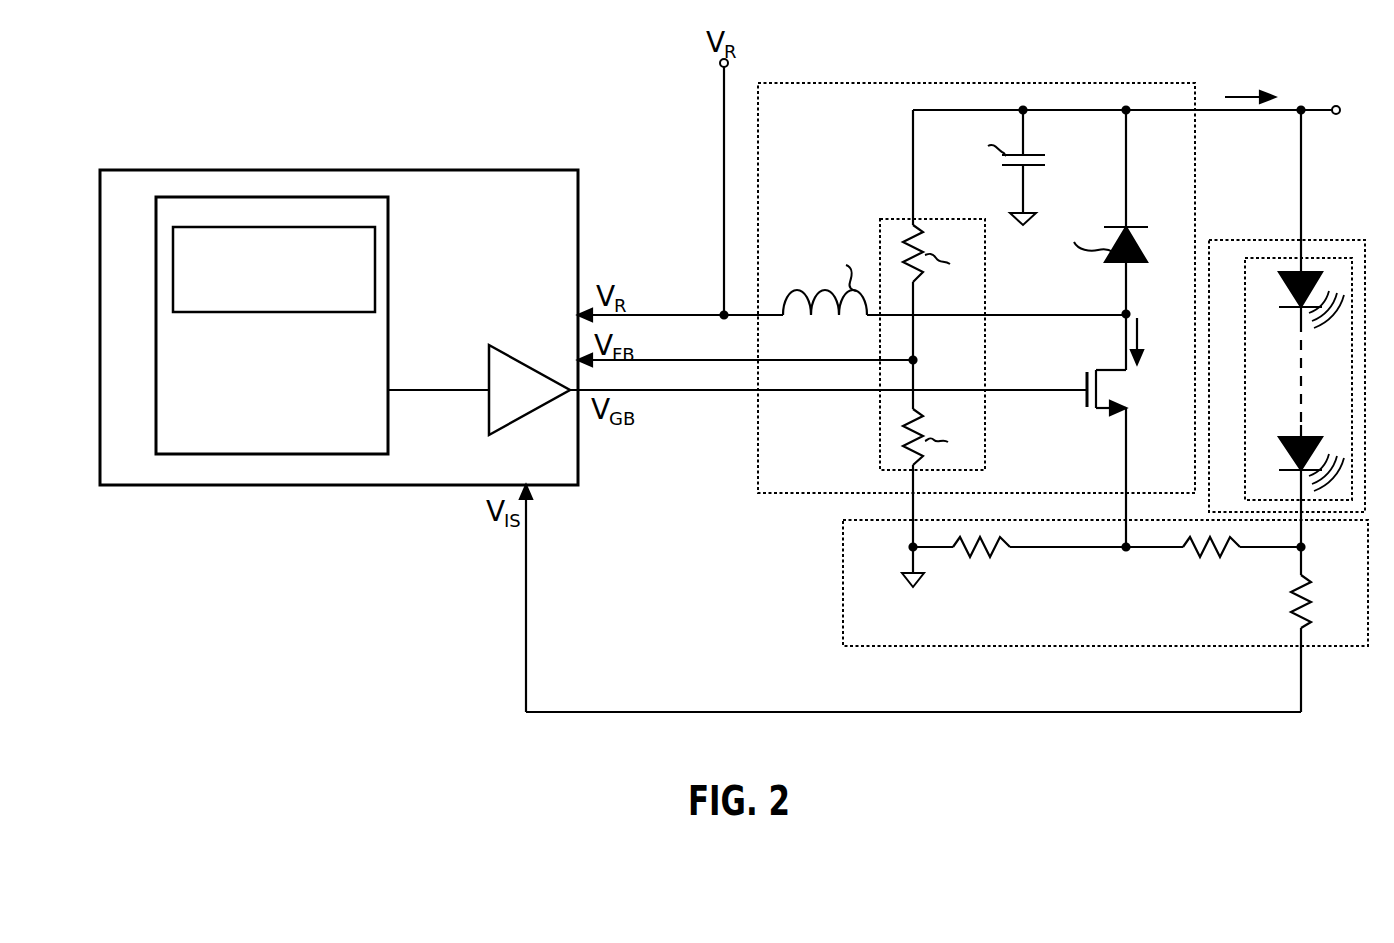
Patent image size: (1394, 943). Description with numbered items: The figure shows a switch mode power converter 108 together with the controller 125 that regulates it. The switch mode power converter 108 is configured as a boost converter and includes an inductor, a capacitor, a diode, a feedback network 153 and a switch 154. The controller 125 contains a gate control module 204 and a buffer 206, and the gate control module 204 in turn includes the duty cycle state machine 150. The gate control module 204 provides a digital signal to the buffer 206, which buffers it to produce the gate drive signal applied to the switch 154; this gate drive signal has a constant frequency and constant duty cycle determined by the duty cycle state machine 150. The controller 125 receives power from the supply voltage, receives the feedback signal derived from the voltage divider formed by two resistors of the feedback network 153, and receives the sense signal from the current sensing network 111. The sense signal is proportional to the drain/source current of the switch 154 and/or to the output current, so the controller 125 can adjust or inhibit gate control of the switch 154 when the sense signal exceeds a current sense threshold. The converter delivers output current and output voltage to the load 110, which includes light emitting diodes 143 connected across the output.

The controller 125 is at (216, 170).
The gate control module 204 is at (156, 320).
The duty cycle state machine 150 is at (249, 312).
The buffer 206 is at (519, 364).
The switch mode power converter 108 is at (870, 83).
The feedback network 153 is at (985, 282).
The switch 154 is at (1115, 376).
The load 110 is at (1266, 240).
The light emitting diodes 143 is at (1246, 322).
The current sensing network 111 is at (843, 585).